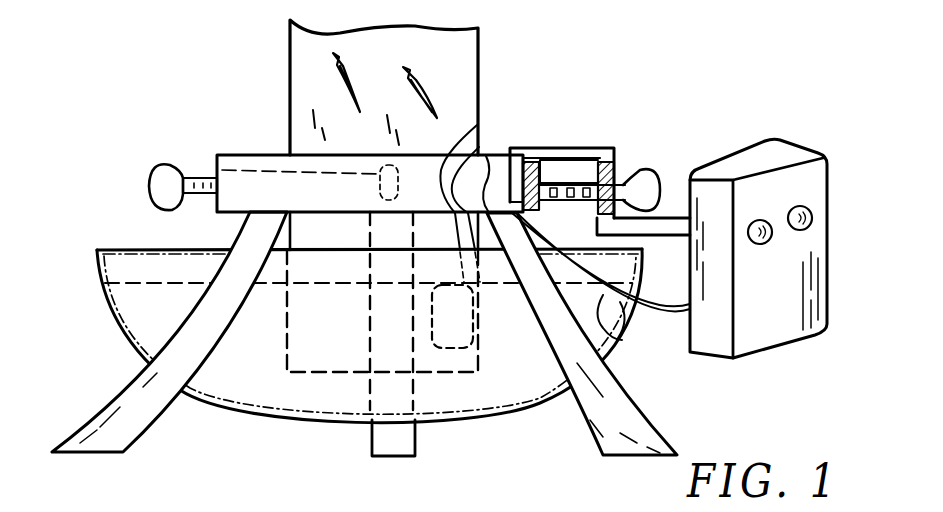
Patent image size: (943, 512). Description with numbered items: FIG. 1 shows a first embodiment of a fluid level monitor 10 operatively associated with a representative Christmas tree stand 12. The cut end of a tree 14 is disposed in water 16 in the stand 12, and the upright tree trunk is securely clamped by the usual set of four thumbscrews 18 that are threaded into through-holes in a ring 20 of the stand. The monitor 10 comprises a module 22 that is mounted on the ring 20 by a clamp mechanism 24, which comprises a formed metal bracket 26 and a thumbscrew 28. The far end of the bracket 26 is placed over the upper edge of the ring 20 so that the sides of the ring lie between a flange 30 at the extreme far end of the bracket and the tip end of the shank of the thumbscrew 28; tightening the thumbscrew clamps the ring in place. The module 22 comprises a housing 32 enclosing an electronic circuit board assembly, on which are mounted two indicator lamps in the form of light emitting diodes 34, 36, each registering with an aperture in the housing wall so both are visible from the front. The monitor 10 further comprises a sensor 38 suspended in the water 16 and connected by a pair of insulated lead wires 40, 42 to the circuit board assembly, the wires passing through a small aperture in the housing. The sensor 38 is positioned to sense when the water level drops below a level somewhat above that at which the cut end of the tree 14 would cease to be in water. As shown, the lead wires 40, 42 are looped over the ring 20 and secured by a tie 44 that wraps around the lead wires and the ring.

The fluid level monitor 10 is at (462, 243).
The Christmas tree stand 12 is at (100, 249).
The tree 14 is at (481, 62).
The water 16 is at (140, 250).
The thumbscrews 18 is at (165, 162).
The ring 20 is at (238, 165).
The module 22 is at (820, 156).
The clamp mechanism 24 is at (613, 146).
The bracket 26 is at (615, 158).
The thumbscrew 28 is at (643, 170).
The flange 30 is at (522, 184).
The housing 32 is at (740, 357).
The light emitting diode 34 is at (762, 244).
The light emitting diode 36 is at (806, 207).
The sensor 38 is at (443, 350).
The lead wire 40 is at (603, 330).
The lead wire 42 is at (633, 328).
The tie 44 is at (462, 150).